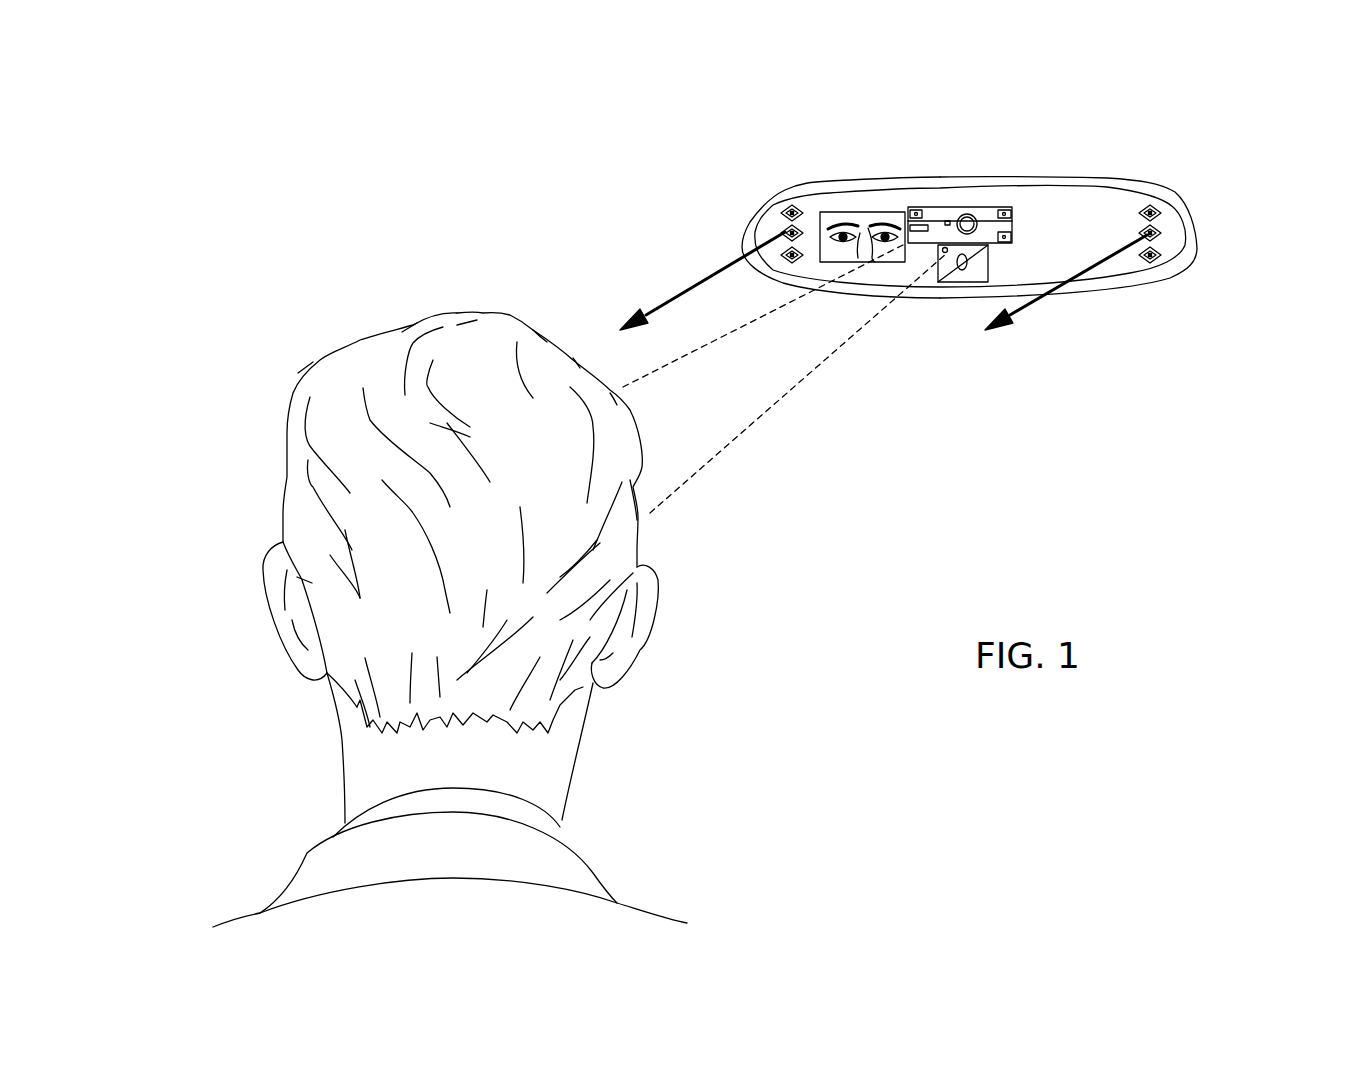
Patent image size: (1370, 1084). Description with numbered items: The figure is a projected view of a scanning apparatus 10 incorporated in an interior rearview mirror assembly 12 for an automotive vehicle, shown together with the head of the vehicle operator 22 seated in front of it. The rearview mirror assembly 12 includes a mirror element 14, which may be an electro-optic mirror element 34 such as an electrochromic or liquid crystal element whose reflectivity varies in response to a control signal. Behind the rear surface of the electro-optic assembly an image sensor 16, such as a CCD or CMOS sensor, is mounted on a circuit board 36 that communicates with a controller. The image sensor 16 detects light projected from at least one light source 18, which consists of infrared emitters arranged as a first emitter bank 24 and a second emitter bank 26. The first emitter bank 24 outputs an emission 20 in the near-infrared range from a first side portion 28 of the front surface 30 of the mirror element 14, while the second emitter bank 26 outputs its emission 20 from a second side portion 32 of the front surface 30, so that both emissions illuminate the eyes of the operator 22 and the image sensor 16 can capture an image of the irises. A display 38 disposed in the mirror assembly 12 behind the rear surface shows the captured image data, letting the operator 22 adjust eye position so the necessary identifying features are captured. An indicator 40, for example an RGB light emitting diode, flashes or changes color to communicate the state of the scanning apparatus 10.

The scanning apparatus 10 is at (755, 110).
The rearview mirror assembly 12 is at (1133, 182).
The mirror element 14 is at (872, 197).
The image sensor 16 is at (977, 220).
The light source 18 is at (961, 233).
The emission 20 is at (678, 292).
The operator 22 is at (387, 337).
The first emitter bank 24 is at (781, 221).
The second emitter bank 26 is at (1158, 248).
The first side portion 28 is at (748, 185).
The front surface 30 is at (1127, 268).
The second side portion 32 is at (1193, 189).
The electro-optic mirror element 34 is at (970, 236).
The circuit board 36 is at (1005, 223).
The display 38 is at (850, 217).
The indicator 40 is at (960, 280).